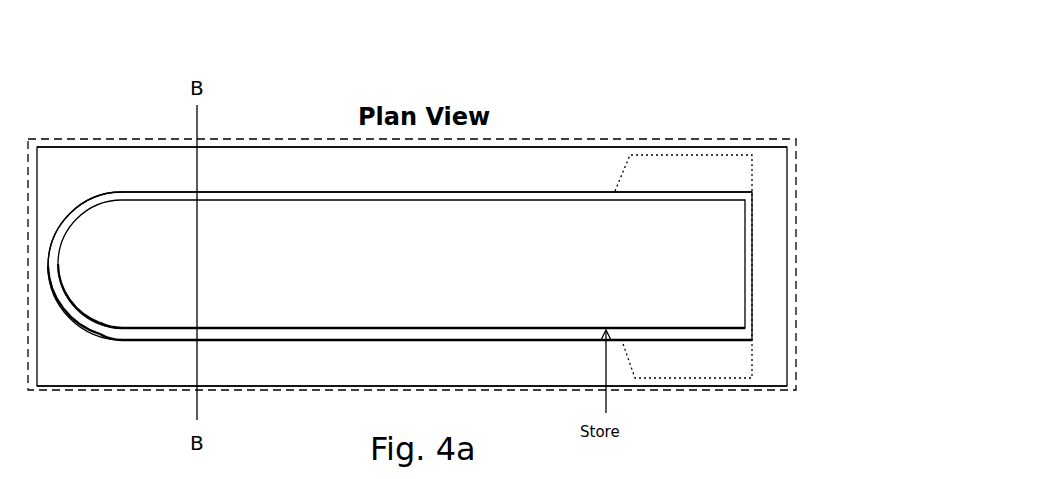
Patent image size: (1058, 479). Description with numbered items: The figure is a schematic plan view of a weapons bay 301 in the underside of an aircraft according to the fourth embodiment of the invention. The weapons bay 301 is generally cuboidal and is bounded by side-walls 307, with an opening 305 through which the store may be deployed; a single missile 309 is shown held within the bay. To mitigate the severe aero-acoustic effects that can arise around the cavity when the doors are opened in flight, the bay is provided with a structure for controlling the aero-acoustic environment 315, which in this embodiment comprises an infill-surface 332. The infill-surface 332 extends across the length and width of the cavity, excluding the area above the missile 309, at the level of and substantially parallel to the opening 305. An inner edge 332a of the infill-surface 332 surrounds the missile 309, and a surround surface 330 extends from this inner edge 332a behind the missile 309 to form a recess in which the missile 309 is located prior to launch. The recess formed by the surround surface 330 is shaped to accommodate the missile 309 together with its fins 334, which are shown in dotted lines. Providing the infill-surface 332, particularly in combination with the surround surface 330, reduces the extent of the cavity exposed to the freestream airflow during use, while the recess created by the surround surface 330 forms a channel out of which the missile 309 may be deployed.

The weapons bay 301 is at (744, 45).
The opening 305 is at (770, 163).
The side-walls 307 is at (627, 138).
The missile 309 is at (360, 267).
The structure for controlling the aero-acoustic environment 315 is at (327, 181).
The surround surface 330 is at (258, 343).
The infill-surface 332 is at (118, 374).
The inner edge 332a is at (123, 190).
The fins 334 is at (698, 171).